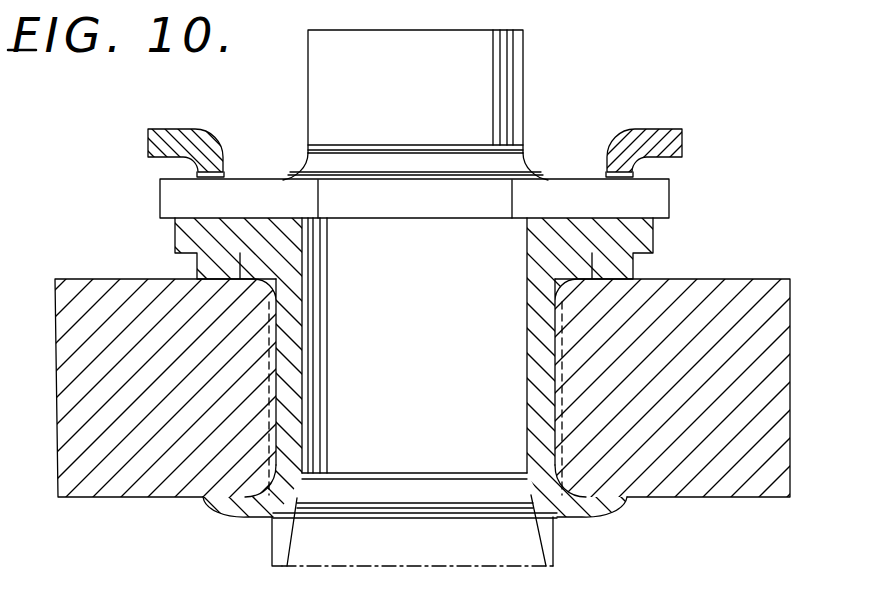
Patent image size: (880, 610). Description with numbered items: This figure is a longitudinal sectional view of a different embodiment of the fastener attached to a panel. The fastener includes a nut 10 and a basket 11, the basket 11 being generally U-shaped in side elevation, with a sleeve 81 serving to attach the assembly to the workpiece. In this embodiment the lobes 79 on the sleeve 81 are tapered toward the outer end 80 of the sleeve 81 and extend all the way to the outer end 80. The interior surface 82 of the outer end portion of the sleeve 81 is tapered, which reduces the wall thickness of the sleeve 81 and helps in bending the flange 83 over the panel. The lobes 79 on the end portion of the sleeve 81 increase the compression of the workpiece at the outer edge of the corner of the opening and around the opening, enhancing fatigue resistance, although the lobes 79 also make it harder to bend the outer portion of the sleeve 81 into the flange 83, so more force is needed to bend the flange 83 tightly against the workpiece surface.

The nut 10 is at (523, 73).
The basket 11 is at (682, 141).
The lobes 79 is at (566, 348).
The outer end 80 is at (553, 567).
The sleeve 81 is at (413, 518).
The interior surface 82 is at (542, 549).
The flange 83 is at (596, 515).